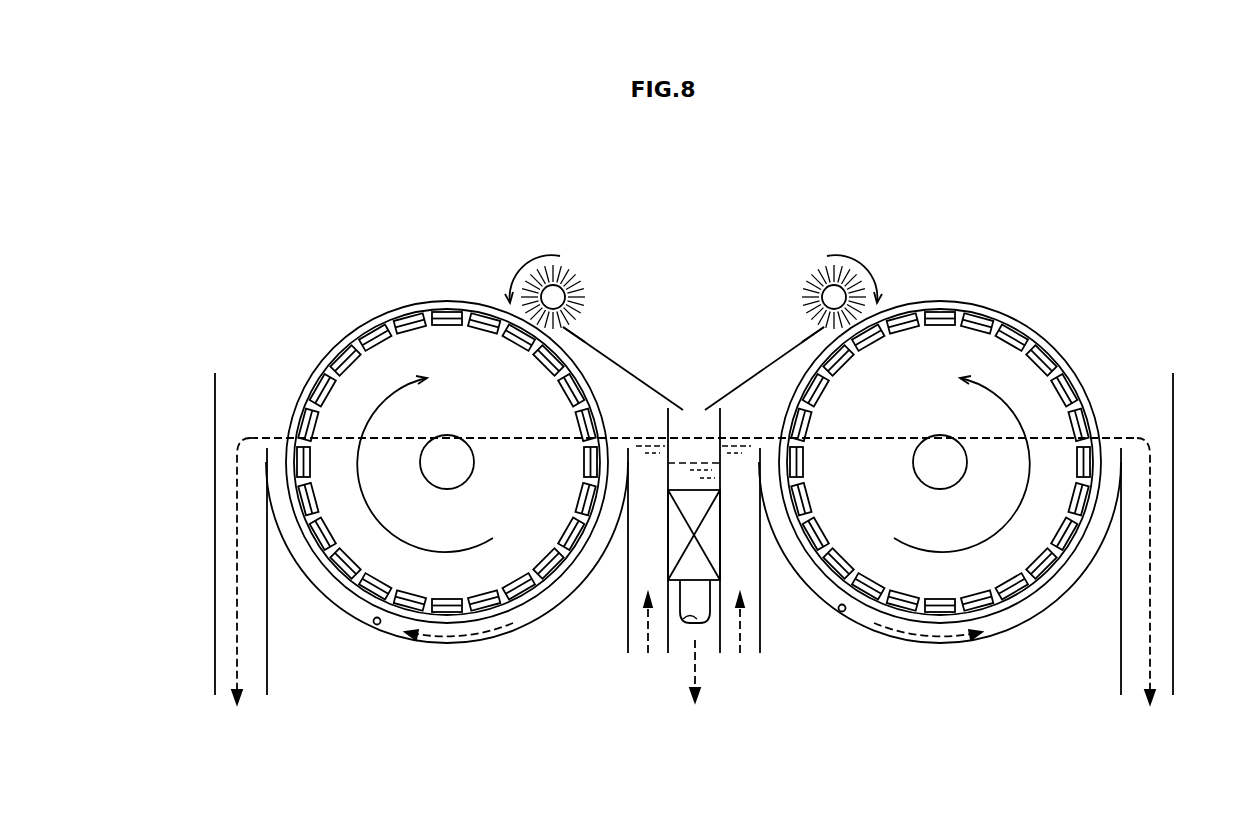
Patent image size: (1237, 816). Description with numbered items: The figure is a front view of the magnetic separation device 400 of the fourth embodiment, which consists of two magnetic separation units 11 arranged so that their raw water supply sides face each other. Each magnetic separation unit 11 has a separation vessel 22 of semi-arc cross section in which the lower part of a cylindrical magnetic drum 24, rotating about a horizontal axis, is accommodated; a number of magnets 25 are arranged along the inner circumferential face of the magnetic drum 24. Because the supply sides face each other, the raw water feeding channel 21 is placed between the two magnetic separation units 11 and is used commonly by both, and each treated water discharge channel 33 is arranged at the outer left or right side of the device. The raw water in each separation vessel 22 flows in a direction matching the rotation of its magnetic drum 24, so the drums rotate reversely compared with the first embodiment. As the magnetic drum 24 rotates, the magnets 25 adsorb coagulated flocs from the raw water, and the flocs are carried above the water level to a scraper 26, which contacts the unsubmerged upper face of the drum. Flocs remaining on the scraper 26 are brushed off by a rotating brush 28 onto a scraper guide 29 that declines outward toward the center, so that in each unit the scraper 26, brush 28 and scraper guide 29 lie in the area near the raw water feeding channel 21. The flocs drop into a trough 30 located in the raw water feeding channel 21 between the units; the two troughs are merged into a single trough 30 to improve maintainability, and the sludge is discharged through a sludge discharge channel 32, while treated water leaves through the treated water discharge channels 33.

The magnetic separation device 400 is at (1099, 168).
The magnetic separation unit 11 is at (475, 208).
The raw water feeding channel 21 is at (762, 637).
The separation vessel 22 is at (379, 625).
The magnetic drum 24 is at (367, 322).
The magnets 25 is at (557, 573).
The scraper 26 is at (567, 330).
The brush 28 is at (577, 277).
The scraper guide 29 is at (650, 387).
The trough 30 is at (680, 537).
The sludge discharge channel 32 is at (686, 622).
The treated water discharge channel 33 is at (213, 545).